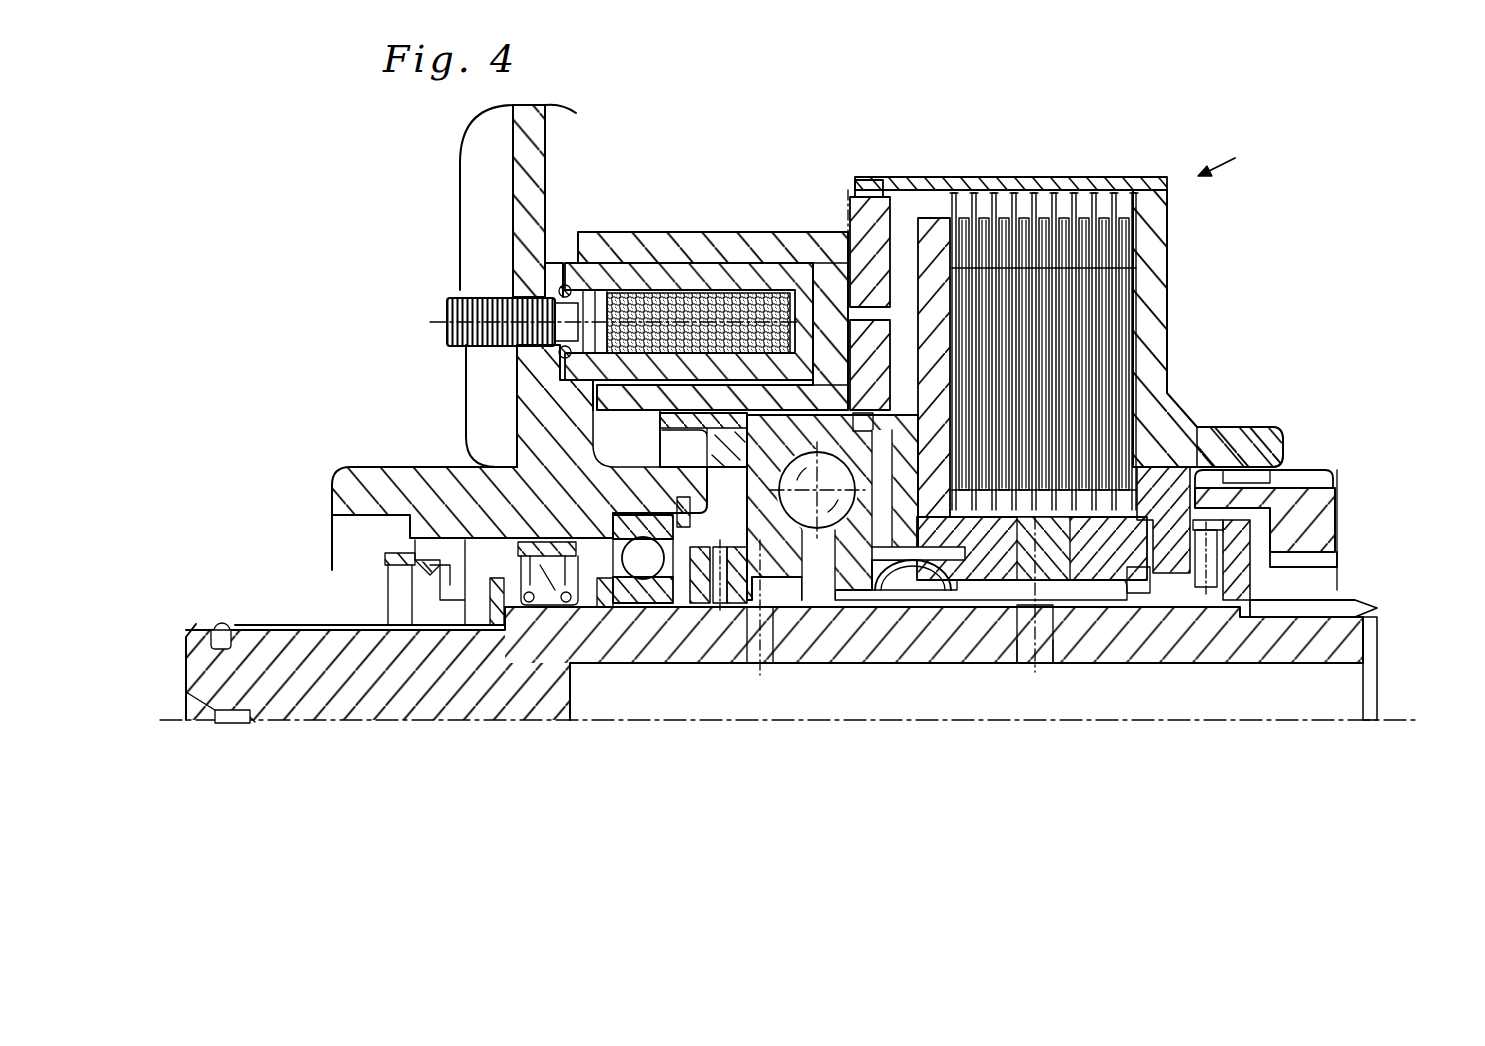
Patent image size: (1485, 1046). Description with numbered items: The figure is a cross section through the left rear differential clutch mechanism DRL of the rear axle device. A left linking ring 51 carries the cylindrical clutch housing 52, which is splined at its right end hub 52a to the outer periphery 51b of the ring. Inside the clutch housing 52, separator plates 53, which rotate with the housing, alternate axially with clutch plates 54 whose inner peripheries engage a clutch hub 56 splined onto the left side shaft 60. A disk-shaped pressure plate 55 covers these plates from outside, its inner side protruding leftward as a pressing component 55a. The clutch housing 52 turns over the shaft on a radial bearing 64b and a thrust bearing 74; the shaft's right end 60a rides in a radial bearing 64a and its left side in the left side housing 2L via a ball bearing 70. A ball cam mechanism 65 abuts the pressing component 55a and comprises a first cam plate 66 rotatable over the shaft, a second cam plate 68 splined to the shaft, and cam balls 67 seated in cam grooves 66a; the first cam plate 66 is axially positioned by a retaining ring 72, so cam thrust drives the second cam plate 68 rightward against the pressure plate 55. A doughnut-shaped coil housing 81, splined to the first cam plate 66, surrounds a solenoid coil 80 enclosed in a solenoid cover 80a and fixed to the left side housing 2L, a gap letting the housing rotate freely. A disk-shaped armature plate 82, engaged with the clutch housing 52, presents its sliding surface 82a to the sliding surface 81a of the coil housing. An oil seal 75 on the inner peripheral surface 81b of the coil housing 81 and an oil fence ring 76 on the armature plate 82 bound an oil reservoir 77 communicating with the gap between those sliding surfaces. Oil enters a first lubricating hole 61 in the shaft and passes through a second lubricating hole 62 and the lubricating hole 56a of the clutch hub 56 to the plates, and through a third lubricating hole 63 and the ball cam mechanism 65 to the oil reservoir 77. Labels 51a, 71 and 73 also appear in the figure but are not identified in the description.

The left side housing 2L is at (548, 147).
The solenoid cover 80a is at (597, 272).
The solenoid coil 80 is at (690, 300).
The coil housing 81 is at (715, 247).
The sliding surface 81a is at (858, 200).
The inner peripheral surface 81b is at (593, 430).
The armature plate 82 is at (876, 268).
The sliding surface 82a is at (830, 268).
The pressure plate 55 is at (928, 225).
The pressing component 55a is at (935, 560).
The clutch plates 54 is at (1025, 210).
The separator plates 53 is at (1088, 210).
The left differential clutch mechanism DRL is at (1234, 150).
The clutch housing 52 is at (1165, 245).
The right end hub 52a is at (1230, 430).
The left linking ring 51 is at (1320, 516).
The hub inner portion 51a is at (1305, 560).
The outer periphery 51b is at (1300, 478).
The radial bearing 64a is at (1365, 607).
The radial bearing 64b is at (1165, 580).
The left side shaft 60 is at (480, 705).
The right end 60a is at (1365, 645).
The first lubricating hole 61 is at (1358, 695).
The second lubricating hole 62 is at (1042, 660).
The third lubricating hole 63 is at (760, 660).
The thrust bearing 74 is at (1210, 560).
The clutch hub 56 is at (1113, 580).
The lubricating hole 56a is at (1010, 540).
The oil fence ring 76 is at (903, 600).
The oil reservoir 77 is at (817, 455).
The ball cam mechanism 65 is at (856, 606).
The first cam plate 66 is at (790, 590).
The cam grooves 66a is at (550, 473).
The cam balls 67 is at (830, 600).
The second cam plate 68 is at (870, 595).
The ball bearing 70 is at (628, 545).
The bearing inner race 71 is at (645, 575).
The retaining ring 72 is at (700, 575).
The oil seal 73 is at (548, 580).
The oil seal 75 is at (663, 440).